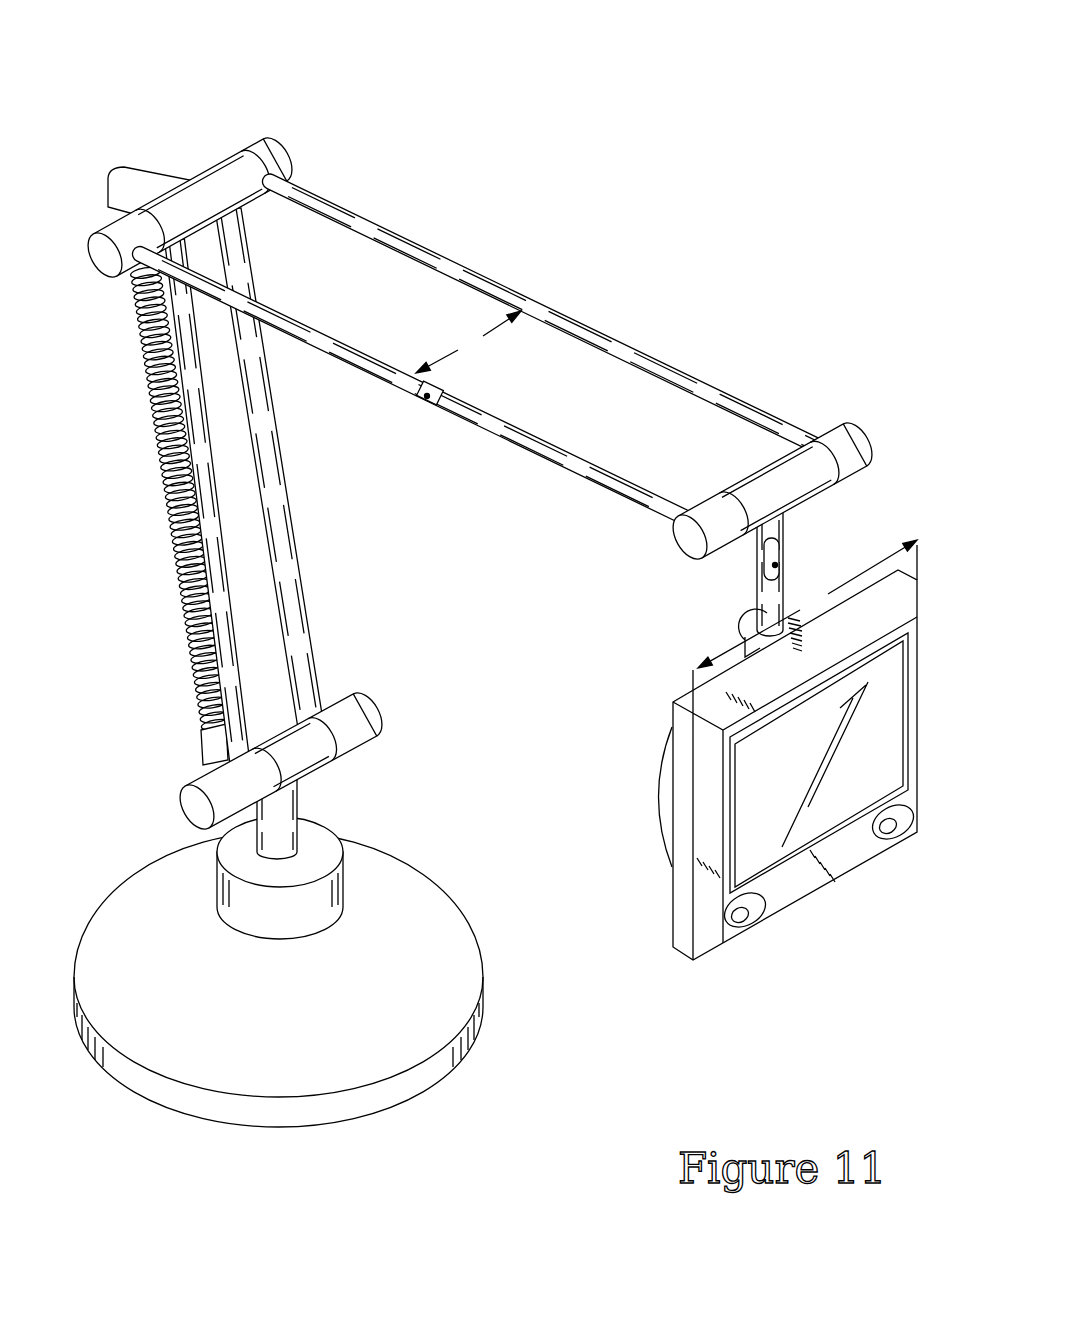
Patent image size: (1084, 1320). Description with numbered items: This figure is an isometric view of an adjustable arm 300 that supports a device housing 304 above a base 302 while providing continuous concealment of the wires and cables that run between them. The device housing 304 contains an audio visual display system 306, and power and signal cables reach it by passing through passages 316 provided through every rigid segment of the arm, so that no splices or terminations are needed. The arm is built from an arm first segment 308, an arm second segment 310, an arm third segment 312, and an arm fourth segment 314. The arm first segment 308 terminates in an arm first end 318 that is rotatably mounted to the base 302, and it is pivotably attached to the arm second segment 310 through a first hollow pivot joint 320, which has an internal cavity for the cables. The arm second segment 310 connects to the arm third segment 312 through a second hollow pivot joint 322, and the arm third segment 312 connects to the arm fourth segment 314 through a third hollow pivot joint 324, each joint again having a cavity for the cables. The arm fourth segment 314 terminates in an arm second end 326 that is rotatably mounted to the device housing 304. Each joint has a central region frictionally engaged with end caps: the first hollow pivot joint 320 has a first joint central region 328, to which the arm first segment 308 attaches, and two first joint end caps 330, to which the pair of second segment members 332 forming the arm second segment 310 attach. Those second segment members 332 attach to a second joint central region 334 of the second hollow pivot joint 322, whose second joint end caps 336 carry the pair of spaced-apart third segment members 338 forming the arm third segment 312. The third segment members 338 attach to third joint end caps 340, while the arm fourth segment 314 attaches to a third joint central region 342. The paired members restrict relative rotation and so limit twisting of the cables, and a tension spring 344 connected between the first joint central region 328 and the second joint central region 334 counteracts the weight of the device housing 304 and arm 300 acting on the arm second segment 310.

The adjustable arm 300 is at (503, 607).
The base 302 is at (368, 1107).
The device housing 304 is at (801, 784).
The audio visual display system 306 is at (880, 805).
The arm first segment 308 is at (290, 826).
The arm second segment 310 is at (299, 493).
The arm third segment 312 is at (485, 350).
The arm fourth segment 314 is at (734, 582).
The passages 316 is at (424, 398).
The arm first end 318 is at (265, 855).
The first hollow pivot joint 320 is at (287, 726).
The second hollow pivot joint 322 is at (218, 206).
The third hollow pivot joint 324 is at (766, 445).
The arm second end 326 is at (767, 627).
The first joint central region 328 is at (297, 753).
The first joint end caps 330 is at (372, 718).
The second segment members 332 is at (267, 438).
The second joint central region 334 is at (200, 190).
The second joint end caps 336 is at (272, 152).
The third segment members 338 is at (523, 433).
The third joint end caps 340 is at (860, 452).
The third joint central region 342 is at (808, 480).
The tension spring 344 is at (190, 662).